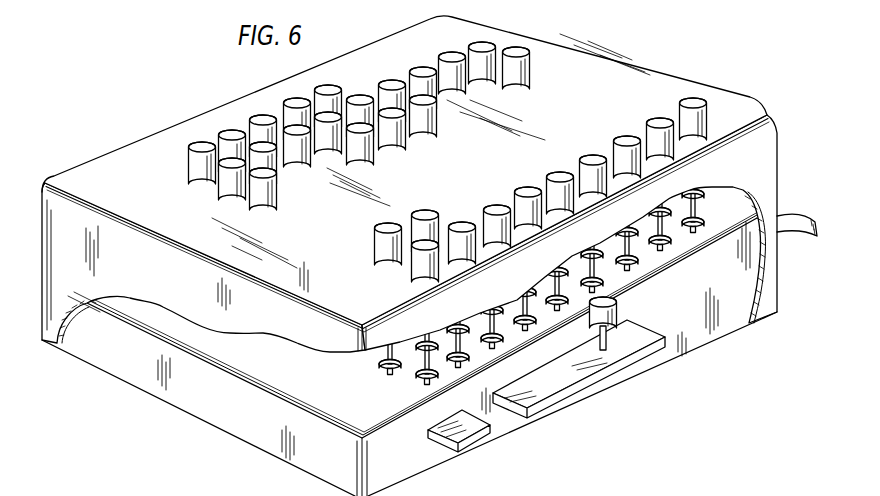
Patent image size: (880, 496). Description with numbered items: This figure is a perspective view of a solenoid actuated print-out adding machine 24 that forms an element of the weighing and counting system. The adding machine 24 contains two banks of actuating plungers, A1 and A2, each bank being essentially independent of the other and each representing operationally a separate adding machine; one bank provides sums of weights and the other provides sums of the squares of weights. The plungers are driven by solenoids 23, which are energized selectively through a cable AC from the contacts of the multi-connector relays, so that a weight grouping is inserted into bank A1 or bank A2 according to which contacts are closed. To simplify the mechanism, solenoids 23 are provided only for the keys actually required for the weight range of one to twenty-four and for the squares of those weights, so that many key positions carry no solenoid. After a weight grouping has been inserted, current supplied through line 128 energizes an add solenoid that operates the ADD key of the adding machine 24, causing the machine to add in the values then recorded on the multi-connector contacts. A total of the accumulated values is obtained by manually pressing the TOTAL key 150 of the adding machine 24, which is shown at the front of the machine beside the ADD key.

The solenoids 23 is at (522, 48).
The adding machine 24 is at (681, 365).
The line 128 is at (686, 280).
The total key 150 is at (502, 453).
The bank of actuating plungers A1 is at (382, 273).
The bank of actuating plungers A2 is at (202, 197).
The cable AC is at (785, 217).
The add key ADD is at (553, 388).
The total key TOTAL is at (483, 433).